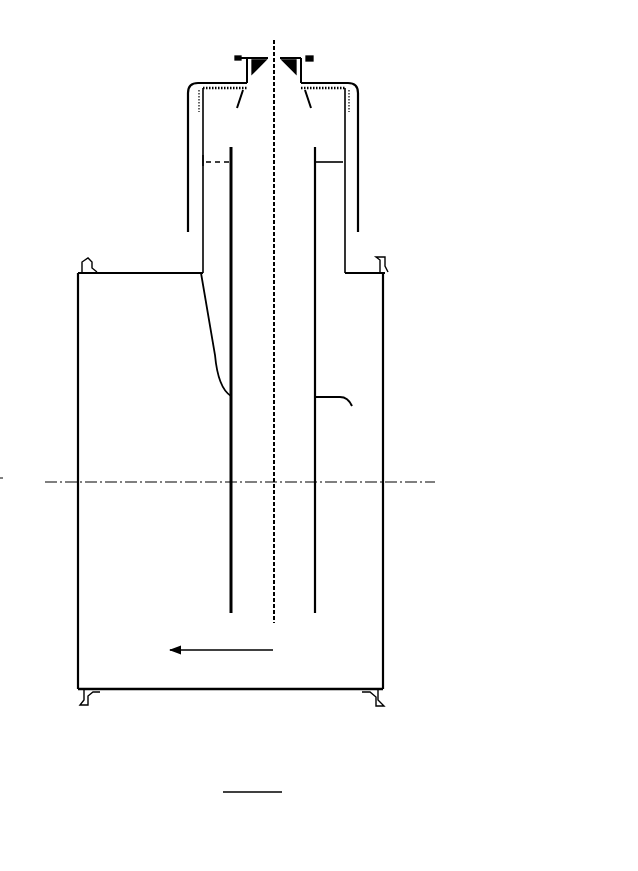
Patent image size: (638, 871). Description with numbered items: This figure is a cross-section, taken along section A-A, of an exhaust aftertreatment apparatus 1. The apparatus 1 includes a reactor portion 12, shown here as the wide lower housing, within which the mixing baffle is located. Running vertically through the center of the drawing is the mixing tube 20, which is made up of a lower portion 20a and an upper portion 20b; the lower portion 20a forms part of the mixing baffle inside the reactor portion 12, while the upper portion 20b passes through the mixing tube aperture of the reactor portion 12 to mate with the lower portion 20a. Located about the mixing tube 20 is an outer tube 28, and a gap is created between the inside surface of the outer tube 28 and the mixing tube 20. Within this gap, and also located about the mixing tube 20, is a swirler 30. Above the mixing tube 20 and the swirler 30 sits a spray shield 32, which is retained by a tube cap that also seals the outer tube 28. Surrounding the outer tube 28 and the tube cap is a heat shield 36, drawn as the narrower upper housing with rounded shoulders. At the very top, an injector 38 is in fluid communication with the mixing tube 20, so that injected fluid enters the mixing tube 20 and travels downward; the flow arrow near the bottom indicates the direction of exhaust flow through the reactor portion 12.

The exhaust aftertreatment apparatus 1 is at (217, 413).
The reactor portion 12 is at (352, 689).
The mixing tube 20 is at (177, 430).
The lower portion of the mixing tube 20a is at (231, 465).
The upper portion of the mixing tube 20b is at (231, 273).
The outer tube 28 is at (202, 180).
The swirler 30 is at (335, 157).
The spray shield 32 is at (107, 230).
The heat shield 36 is at (186, 120).
The injector 38 is at (268, 56).